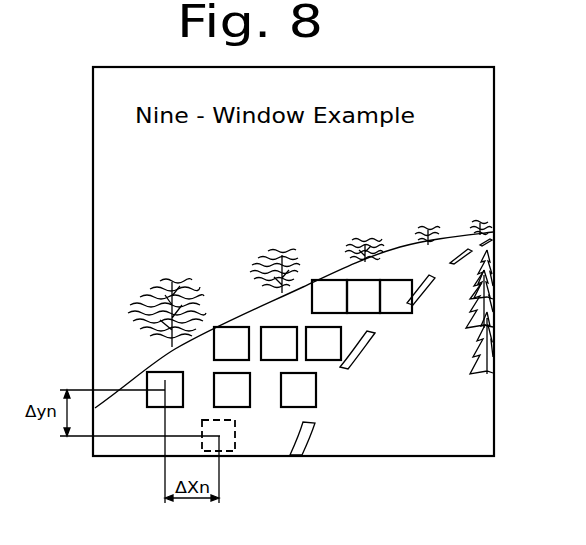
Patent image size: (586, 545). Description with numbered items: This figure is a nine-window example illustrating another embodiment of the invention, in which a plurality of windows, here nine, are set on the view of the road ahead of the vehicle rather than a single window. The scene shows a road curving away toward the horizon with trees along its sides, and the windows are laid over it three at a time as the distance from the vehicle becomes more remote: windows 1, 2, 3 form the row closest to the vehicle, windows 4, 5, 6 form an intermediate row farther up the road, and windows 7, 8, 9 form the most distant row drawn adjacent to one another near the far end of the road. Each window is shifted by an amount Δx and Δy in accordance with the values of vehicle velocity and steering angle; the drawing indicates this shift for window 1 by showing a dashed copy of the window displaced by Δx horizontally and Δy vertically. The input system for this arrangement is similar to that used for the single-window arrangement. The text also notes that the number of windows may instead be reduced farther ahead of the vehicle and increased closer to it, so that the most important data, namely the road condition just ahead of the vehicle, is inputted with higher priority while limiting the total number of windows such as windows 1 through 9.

The window 1 is at (165, 389).
The window 2 is at (232, 390).
The window 3 is at (298, 390).
The window 4 is at (231, 343).
The window 5 is at (279, 343).
The window 6 is at (323, 343).
The window 7 is at (329, 296).
The window 8 is at (363, 296).
The window 9 is at (396, 296).